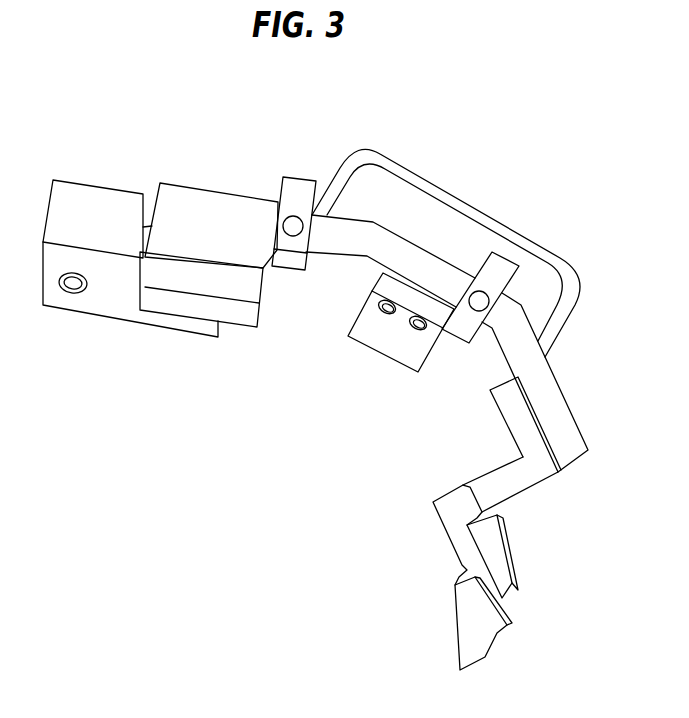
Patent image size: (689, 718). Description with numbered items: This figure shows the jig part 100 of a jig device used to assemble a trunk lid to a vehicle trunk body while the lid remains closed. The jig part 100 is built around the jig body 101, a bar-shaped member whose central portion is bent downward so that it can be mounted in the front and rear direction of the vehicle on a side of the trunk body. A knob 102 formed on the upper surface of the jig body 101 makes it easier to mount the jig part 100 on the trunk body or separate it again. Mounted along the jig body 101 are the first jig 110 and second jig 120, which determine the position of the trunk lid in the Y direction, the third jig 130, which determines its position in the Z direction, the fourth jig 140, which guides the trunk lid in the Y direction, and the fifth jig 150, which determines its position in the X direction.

The jig part 100 is at (63, 114).
The jig body 101 is at (370, 242).
The knob 102 is at (481, 212).
The first jig 110 is at (95, 303).
The second jig 120 is at (390, 343).
The third jig 130 is at (188, 285).
The fourth jig 140 is at (287, 262).
The fifth jig 150 is at (490, 553).